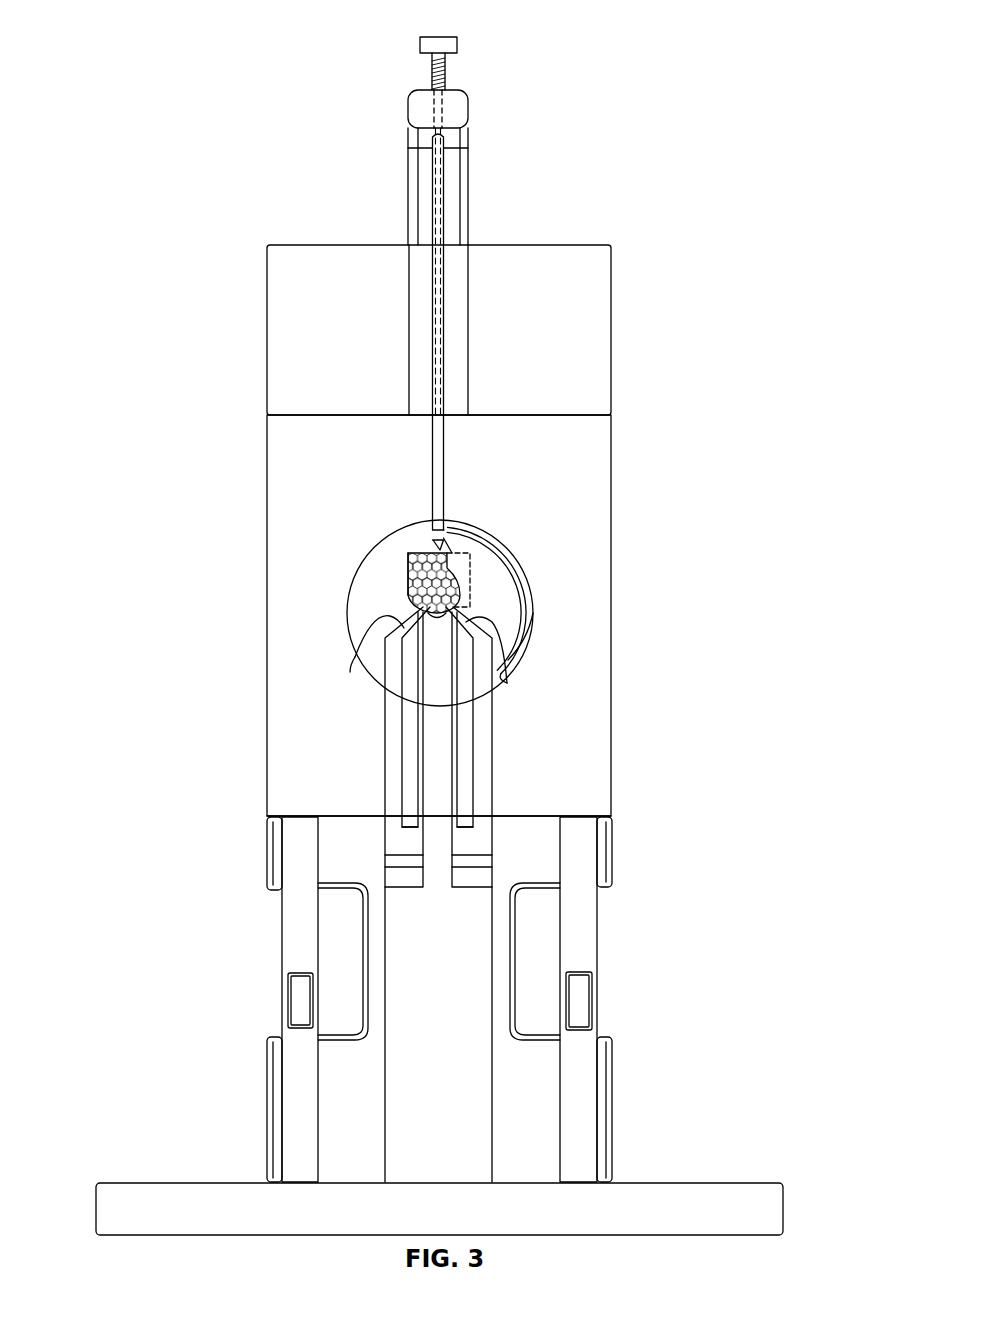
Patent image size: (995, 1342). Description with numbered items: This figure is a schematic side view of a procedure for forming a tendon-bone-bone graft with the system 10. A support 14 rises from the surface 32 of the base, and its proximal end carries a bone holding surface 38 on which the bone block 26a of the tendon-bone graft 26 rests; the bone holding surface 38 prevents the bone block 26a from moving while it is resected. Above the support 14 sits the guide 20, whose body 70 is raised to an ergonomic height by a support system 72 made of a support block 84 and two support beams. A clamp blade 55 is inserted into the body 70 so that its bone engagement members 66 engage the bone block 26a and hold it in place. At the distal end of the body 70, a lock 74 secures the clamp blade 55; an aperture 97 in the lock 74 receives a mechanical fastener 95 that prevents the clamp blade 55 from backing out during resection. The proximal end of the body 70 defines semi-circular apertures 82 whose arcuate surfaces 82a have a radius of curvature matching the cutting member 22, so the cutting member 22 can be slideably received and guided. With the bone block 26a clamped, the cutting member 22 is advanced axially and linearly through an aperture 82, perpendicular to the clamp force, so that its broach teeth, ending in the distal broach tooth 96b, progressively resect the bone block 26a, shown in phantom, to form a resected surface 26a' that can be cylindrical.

The system 10 is at (742, 198).
The support 14 is at (492, 1143).
The guide 20 is at (613, 318).
The cutting member 22 is at (535, 620).
The tendon-bone graft 26 is at (398, 553).
The bone block 26a is at (355, 554).
The resected surface 26a' is at (510, 563).
The surface 32 is at (127, 1183).
The bone holding surface 38 is at (434, 616).
The clamp blade 55 is at (448, 190).
The bone engagement member 66 is at (452, 542).
The body 70 is at (613, 497).
The support system 72 is at (255, 915).
The lock 74 is at (472, 98).
The aperture 82 is at (345, 585).
The arcuate surface 82a is at (350, 617).
The support block 84 is at (613, 857).
The mechanical fastener 95 is at (438, 37).
The distal broach tooth 96b is at (507, 585).
The aperture 97 is at (426, 108).